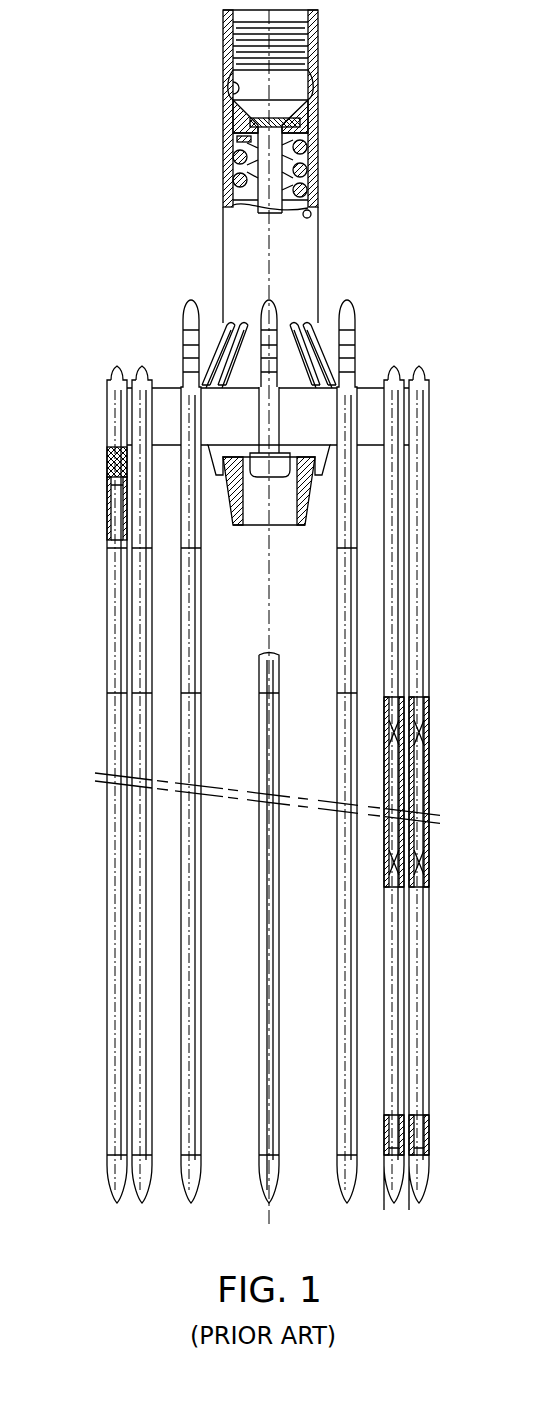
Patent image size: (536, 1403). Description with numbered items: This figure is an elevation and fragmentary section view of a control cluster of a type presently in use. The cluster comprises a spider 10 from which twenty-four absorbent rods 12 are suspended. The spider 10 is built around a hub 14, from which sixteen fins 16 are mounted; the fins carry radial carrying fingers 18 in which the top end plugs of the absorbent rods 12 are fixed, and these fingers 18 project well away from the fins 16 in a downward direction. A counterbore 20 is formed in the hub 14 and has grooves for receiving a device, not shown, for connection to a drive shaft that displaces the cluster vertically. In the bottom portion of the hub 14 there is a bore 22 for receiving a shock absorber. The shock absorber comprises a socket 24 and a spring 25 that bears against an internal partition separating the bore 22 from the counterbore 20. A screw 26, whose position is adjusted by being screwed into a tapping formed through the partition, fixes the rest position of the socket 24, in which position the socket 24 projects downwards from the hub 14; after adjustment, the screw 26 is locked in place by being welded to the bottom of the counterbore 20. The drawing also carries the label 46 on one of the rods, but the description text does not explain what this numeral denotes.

The spider 10 is at (335, 300).
The rods 12 is at (395, 770).
The hub 14 is at (314, 192).
The fins 16 is at (336, 352).
The radial carrying fingers 18 is at (118, 380).
The counterbore 20 is at (228, 96).
The bore 22 is at (312, 218).
The socket 24 is at (238, 528).
The spring 25 is at (313, 157).
The screw 26 is at (262, 208).
The rod 46 is at (388, 640).